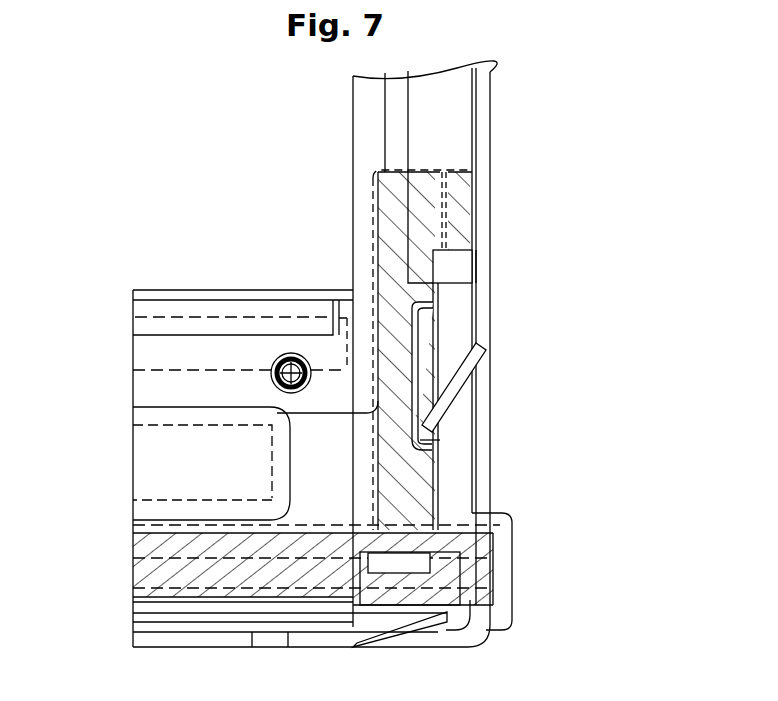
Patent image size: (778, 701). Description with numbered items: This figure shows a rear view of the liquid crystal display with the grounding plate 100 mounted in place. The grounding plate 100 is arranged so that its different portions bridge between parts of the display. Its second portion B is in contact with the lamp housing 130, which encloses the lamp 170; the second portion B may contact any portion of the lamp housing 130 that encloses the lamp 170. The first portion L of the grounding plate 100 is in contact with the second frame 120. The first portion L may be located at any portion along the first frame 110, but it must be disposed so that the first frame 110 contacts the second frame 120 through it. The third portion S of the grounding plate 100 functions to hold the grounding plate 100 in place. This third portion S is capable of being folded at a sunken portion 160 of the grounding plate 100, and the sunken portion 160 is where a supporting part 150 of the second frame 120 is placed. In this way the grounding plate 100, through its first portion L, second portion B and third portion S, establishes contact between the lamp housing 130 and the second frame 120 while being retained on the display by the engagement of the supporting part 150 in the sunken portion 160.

The second frame 120 is at (493, 118).
The grounding plate 100 is at (457, 207).
The first portion L is at (478, 215).
The first frame 110 is at (472, 277).
The third portion S is at (417, 350).
The sunken portion 160 is at (430, 368).
The supporting part 150 is at (450, 400).
The second portion B is at (423, 568).
The lamp 170 is at (135, 554).
The lamp housing 130 is at (150, 603).